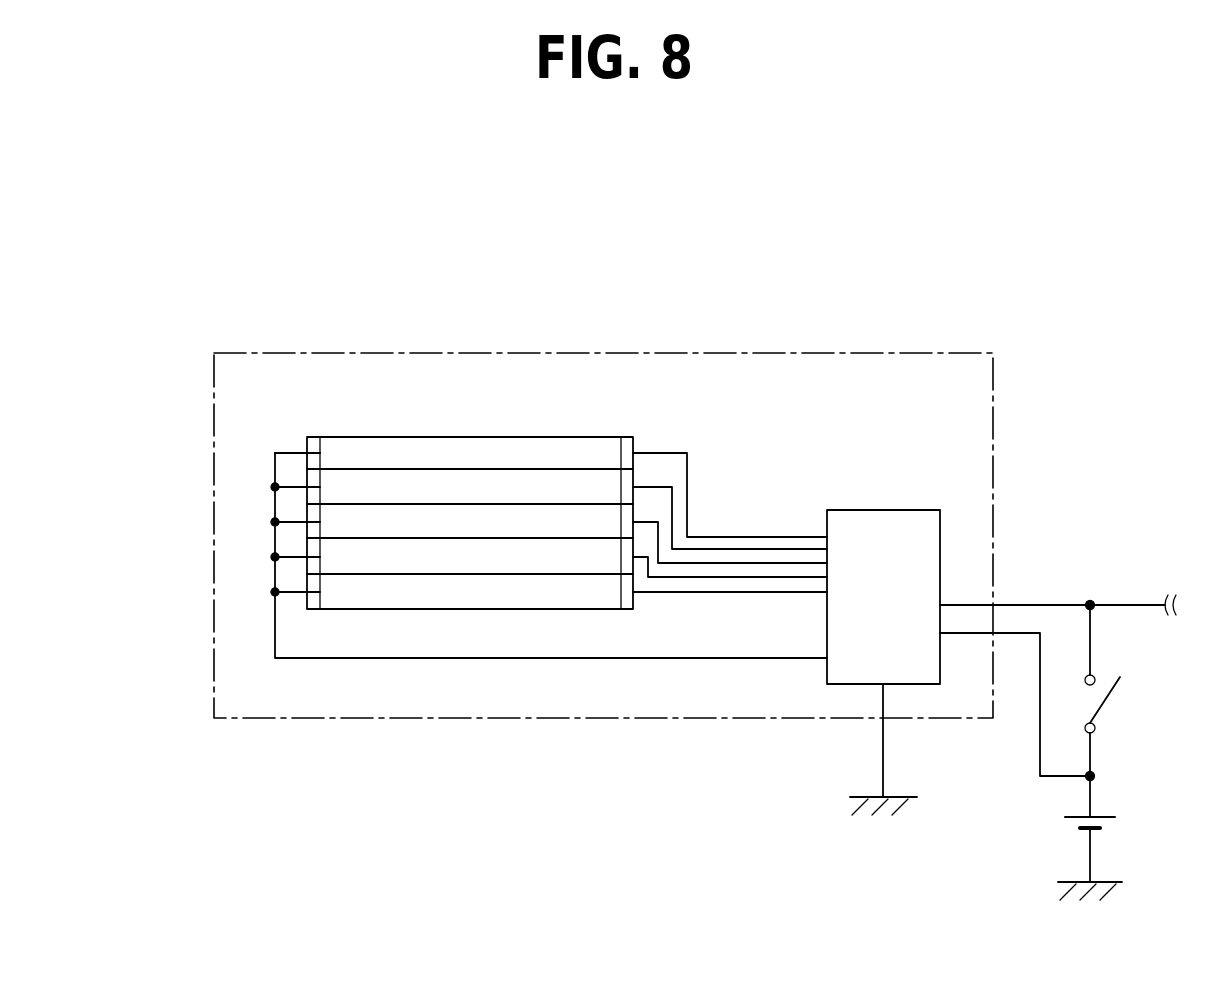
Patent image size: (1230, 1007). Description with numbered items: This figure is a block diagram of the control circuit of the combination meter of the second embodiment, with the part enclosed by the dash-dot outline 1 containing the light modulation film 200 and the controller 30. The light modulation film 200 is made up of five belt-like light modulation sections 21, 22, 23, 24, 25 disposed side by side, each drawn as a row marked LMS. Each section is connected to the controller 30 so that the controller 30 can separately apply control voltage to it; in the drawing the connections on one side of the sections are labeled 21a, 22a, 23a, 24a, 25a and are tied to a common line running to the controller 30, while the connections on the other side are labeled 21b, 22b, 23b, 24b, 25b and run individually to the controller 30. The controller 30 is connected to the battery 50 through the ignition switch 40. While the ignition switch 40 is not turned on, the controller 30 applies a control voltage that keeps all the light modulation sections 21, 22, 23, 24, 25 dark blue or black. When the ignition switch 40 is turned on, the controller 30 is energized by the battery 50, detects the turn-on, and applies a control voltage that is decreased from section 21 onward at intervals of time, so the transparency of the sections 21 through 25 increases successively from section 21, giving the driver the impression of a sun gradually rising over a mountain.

The sensor apparatus 1 is at (258, 346).
The light modulation film 200 is at (586, 272).
The light modulation section 21 is at (352, 434).
The light modulation section 22 is at (393, 467).
The light modulation section 23 is at (418, 502).
The light modulation section 24 is at (511, 536).
The light modulation section 25 is at (531, 572).
The first terminal of sensor 21 21a is at (308, 444).
The first terminal of sensor 22 22a is at (310, 476).
The first terminal of sensor 23 23a is at (310, 510).
The first terminal of sensor 24 24a is at (310, 545).
The first terminal of sensor 25 25a is at (310, 580).
The second terminal of sensor 21 21b is at (621, 448).
The second terminal of sensor 22 22b is at (621, 483).
The second terminal of sensor 23 23b is at (621, 520).
The second terminal of sensor 24 24b is at (622, 556).
The second terminal of sensor 25 25b is at (626, 592).
The controller 30 is at (856, 510).
The ignition switch 40 is at (1107, 698).
The battery 50 is at (1107, 812).